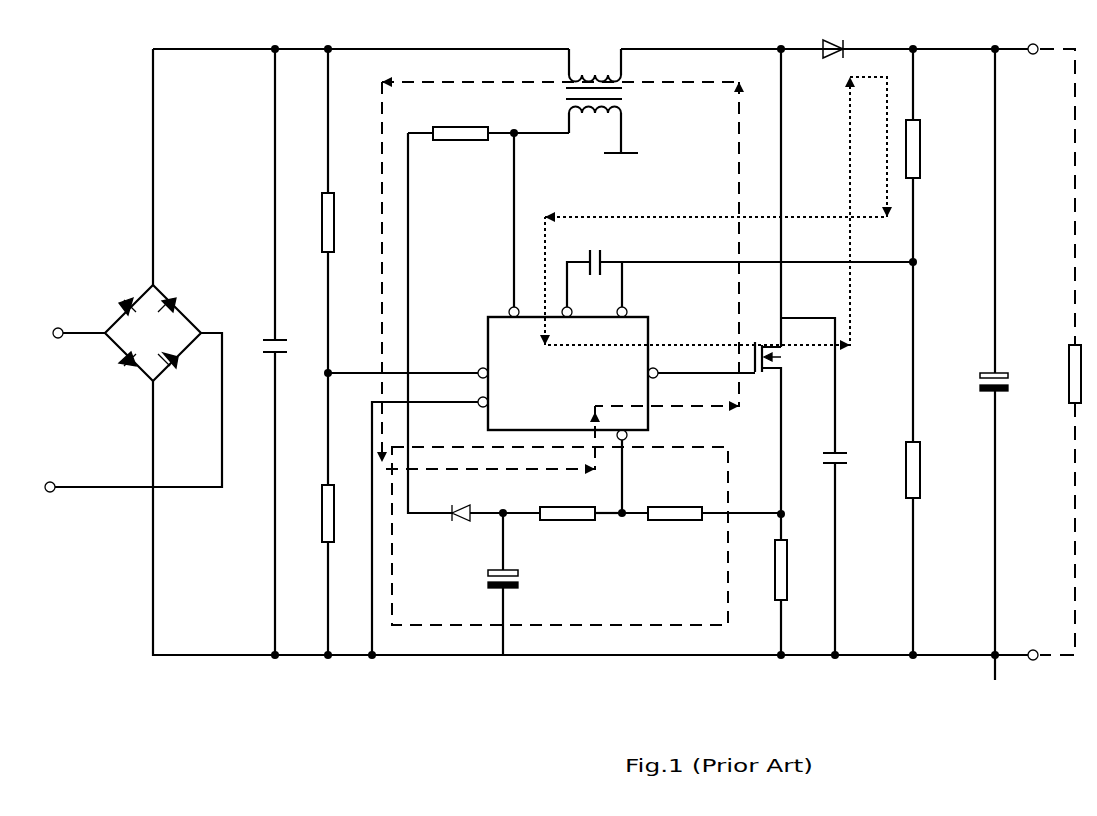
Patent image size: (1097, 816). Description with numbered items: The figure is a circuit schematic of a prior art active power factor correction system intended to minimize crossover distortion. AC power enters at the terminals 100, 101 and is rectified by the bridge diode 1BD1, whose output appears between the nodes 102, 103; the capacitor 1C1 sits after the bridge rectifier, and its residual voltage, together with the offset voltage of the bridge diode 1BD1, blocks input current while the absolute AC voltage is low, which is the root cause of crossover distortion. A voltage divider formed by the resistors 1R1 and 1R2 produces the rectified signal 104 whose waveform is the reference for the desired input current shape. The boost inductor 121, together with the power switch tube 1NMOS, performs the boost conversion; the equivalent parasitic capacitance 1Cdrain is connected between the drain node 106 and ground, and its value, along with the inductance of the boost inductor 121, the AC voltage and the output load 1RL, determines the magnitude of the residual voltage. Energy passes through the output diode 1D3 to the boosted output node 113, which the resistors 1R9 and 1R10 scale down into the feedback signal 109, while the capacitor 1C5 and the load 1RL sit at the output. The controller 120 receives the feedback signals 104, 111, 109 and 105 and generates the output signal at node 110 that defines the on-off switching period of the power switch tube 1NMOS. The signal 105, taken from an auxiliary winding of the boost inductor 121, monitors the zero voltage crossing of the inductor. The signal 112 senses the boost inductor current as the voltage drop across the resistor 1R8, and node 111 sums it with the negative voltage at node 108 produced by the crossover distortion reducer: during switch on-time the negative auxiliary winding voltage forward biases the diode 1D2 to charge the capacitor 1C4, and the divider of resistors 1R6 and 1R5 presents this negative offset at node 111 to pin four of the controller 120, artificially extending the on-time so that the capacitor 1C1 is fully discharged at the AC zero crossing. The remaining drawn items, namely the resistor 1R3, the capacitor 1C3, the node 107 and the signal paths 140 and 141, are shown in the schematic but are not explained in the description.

The AC input terminal 100 is at (74, 321).
The AC input terminal 101 is at (133, 412).
The rectified supply node 102 is at (590, 156).
The ground node 103 is at (590, 518).
The rectified voltage signal 104 is at (401, 364).
The zero voltage crossing signal 105 is at (498, 218).
The drain node 106 is at (784, 184).
The timing capacitor node 107 is at (585, 284).
The crossover distortion reducer node 108 is at (516, 501).
The scaled-down boosted output signal 109 is at (769, 254).
The output signal node 110 is at (706, 363).
The current sense control signal node 111 is at (628, 490).
The boost inductor current sense signal 112 is at (799, 513).
The boosted output node 113 is at (973, 41).
The controller 120 is at (568, 373).
The boost inductor 121 is at (614, 101).
The feedback signal path 140 is at (716, 213).
The control signal path 141 is at (560, 275).
The bridge diode 1BD1 is at (153, 332).
The capacitor 1C1 is at (288, 352).
The resistor 1R1 is at (347, 209).
The resistor 1R2 is at (310, 516).
The resistor 1R3 is at (488, 123).
The capacitor 1C3 is at (601, 266).
The diode 1D2 is at (455, 342).
The capacitor 1C4 is at (522, 584).
The resistor 1R5 is at (581, 502).
The resistor 1R6 is at (714, 502).
The inductive resistor 1R8 is at (763, 586).
The power switch tube 1NMOS is at (787, 428).
The equivalent parasitic capacitance 1Cdrain is at (843, 488).
The output diode 1D3 is at (842, 33).
The resistor 1R9 is at (932, 155).
The resistor 1R10 is at (939, 460).
The output capacitor 1C5 is at (983, 364).
The output load 1RL is at (1059, 352).